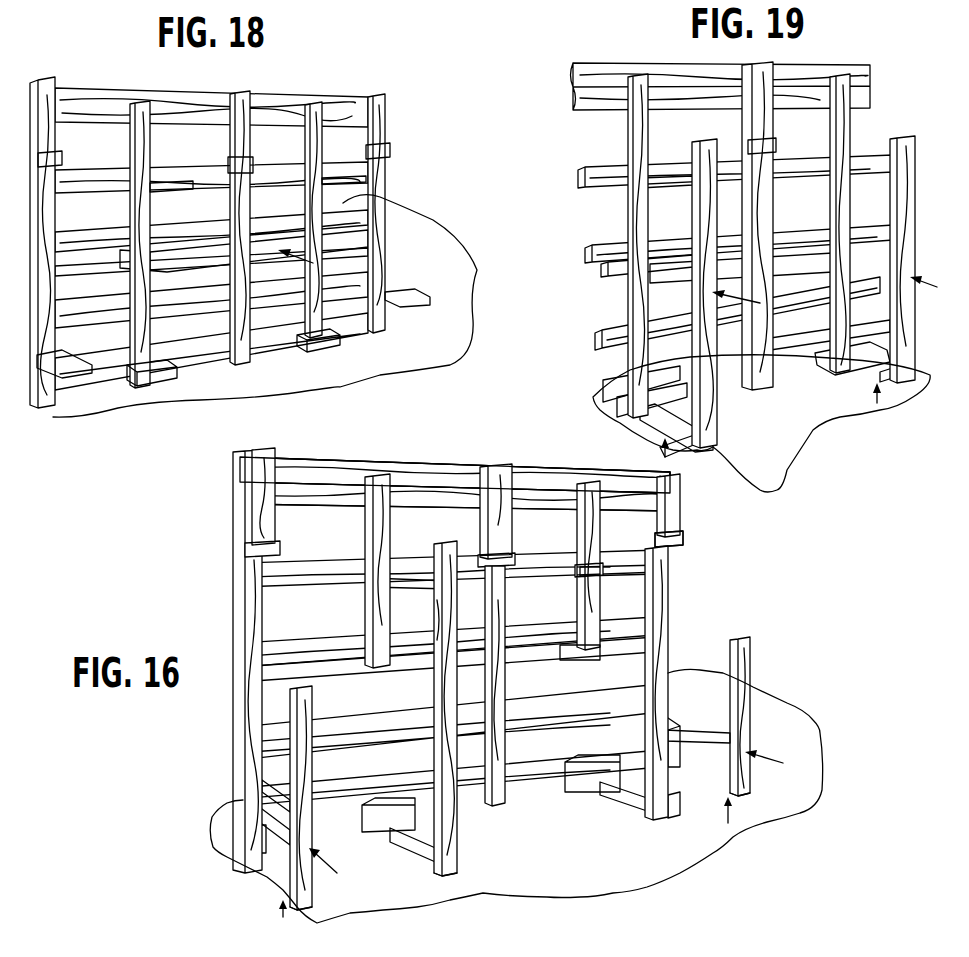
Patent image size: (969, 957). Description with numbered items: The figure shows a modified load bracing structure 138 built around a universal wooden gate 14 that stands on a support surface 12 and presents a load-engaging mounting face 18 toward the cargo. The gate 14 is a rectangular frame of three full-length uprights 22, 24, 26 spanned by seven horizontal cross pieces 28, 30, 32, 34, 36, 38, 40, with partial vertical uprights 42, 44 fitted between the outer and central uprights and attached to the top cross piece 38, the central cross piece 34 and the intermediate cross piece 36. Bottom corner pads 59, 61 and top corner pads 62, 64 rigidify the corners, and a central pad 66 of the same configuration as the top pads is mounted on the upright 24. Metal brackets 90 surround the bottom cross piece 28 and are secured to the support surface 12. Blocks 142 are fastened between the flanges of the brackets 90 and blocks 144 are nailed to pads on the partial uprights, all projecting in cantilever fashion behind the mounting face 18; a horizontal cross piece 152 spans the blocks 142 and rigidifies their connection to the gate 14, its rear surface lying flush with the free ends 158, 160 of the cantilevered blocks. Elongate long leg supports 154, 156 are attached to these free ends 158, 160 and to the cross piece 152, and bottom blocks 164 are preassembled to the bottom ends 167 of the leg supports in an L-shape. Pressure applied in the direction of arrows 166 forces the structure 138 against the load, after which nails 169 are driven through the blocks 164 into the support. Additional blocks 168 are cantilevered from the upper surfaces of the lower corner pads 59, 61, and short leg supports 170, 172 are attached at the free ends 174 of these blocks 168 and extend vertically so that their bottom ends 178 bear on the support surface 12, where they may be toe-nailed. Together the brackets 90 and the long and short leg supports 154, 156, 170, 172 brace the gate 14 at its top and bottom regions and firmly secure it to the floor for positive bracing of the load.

In FIG. 16, the support surface 12 is at (587, 867).
In FIG. 18, the gate 14 is at (100, 105).
In FIG. 16, the gate 14 is at (295, 482).
In FIG. 16, the mounting face 18 is at (560, 490).
In FIG. 16, the full length upright 22 is at (657, 522).
In FIG. 16, the full length upright 24 is at (498, 612).
In FIG. 16, the full length upright 26 is at (250, 610).
In FIG. 16, the bottom cross piece 28 is at (347, 820).
In FIG. 16, the horizontal cross piece 30 is at (347, 752).
In FIG. 16, the horizontal cross piece 32 is at (340, 682).
In FIG. 16, the central cross piece 34 is at (323, 662).
In FIG. 16, the intermediate cross piece 36 is at (333, 585).
In FIG. 16, the top cross piece 38 is at (327, 502).
In FIG. 16, the horizontal cross piece 40 is at (327, 477).
In FIG. 16, the partial vertical upright 42 is at (376, 518).
In FIG. 16, the partial vertical upright 44 is at (590, 522).
In FIG. 16, the bottom corner pad 59 is at (250, 845).
In FIG. 16, the bottom corner pad 61 is at (680, 775).
In FIG. 16, the top corner pad 62 is at (262, 455).
In FIG. 16, the top corner pad 64 is at (510, 480).
In FIG. 16, the central pad 66 is at (670, 478).
In FIG. 16, the bracket 90 is at (377, 800).
In FIG. 16, the load bracing structure 138 is at (447, 448).
In FIG. 18, the block 142 is at (148, 268).
In FIG. 19, the block 142 is at (670, 270).
In FIG. 19, the block 144 is at (667, 190).
In FIG. 18, the horizontal cross piece 152 is at (370, 236).
In FIG. 19, the horizontal cross piece 152 is at (745, 270).
In FIG. 16, the horizontal cross piece 152 is at (545, 670).
In FIG. 19, the long leg support 154 is at (907, 178).
In FIG. 16, the long leg support 154 is at (662, 585).
In FIG. 19, the long leg support 156 is at (716, 140).
In FIG. 16, the long leg support 156 is at (445, 615).
In FIG. 16, the free end 158 is at (436, 873).
In FIG. 16, the free end 160 is at (452, 543).
In FIG. 19, the bottom block 164 is at (690, 425).
In FIG. 19, the arrows 166 is at (723, 316).
In FIG. 19, the bottom end 167 is at (690, 455).
In FIG. 16, the block 168 is at (263, 793).
In FIG. 19, the nail 169 is at (835, 323).
In FIG. 16, the short leg support 170 is at (728, 777).
In FIG. 16, the short leg support 172 is at (290, 877).
In FIG. 16, the free end 174 is at (287, 823).
In FIG. 16, the bottom end 178 is at (310, 893).